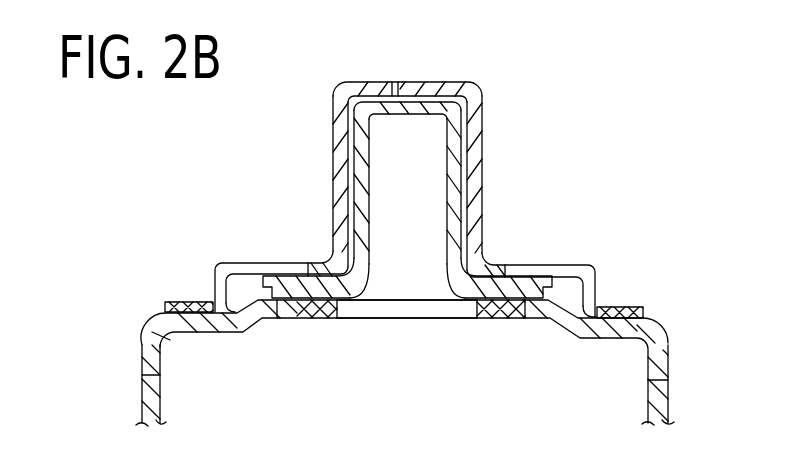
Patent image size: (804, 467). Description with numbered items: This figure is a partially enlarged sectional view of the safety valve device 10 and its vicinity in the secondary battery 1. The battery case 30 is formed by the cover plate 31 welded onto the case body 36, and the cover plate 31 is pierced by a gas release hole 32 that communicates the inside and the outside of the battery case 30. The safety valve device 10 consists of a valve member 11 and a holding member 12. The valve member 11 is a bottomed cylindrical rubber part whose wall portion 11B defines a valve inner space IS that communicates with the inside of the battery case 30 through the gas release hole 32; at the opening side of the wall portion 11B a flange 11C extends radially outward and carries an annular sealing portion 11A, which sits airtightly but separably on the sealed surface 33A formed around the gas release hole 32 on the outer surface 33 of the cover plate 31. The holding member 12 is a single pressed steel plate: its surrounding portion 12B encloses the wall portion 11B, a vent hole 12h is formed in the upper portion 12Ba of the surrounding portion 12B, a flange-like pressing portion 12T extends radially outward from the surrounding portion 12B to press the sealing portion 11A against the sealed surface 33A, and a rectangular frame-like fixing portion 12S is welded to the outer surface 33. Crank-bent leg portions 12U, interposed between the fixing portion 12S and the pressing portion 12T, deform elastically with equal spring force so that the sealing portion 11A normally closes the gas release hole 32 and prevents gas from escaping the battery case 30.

The secondary battery 1 is at (487, 53).
The safety valve device 10 is at (563, 52).
The valve member 11 is at (474, 144).
The sealing portion 11A is at (279, 319).
The wall portion 11B is at (356, 150).
The flange 11C is at (300, 263).
The holding member 12 is at (470, 78).
The surrounding portion 12B is at (336, 106).
The upper portion 12Ba is at (368, 81).
The vent hole 12h is at (421, 81).
The leg portions 12U is at (222, 263).
The pressing portion 12T is at (500, 267).
The fixing portion 12S is at (599, 303).
The valve inner space IS is at (425, 217).
The battery case 30 is at (712, 345).
The cover plate 31 is at (668, 357).
The gas release hole 32 is at (463, 307).
The outer surface 33 is at (178, 301).
The sealed surface 33A is at (331, 317).
The case body 36 is at (668, 405).